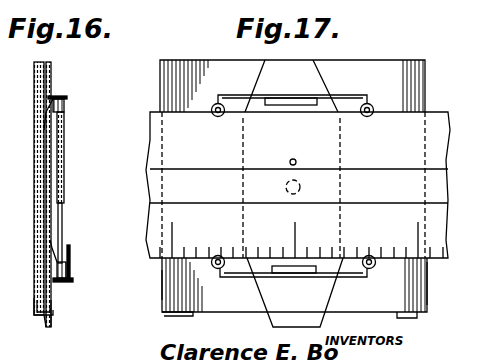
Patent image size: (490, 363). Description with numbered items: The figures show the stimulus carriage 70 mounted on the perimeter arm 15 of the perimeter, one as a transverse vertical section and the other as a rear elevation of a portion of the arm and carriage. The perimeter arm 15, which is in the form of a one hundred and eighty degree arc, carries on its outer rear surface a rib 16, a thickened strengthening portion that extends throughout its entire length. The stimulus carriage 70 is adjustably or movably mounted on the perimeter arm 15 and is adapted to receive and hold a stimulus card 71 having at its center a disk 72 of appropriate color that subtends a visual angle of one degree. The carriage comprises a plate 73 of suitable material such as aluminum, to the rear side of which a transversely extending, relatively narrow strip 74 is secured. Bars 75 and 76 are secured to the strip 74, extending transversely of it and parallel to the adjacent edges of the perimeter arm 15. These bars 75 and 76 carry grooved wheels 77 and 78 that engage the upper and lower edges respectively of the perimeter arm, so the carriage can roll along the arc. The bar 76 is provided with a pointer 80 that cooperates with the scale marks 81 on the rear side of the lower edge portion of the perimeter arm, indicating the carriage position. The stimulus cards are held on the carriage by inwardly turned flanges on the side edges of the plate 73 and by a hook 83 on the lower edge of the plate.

In FIG. 16, the perimeter arm 15 is at (63, 153).
In FIG. 17, the perimeter arm 15 is at (436, 116).
In FIG. 16, the rib 16 is at (64, 183).
In FIG. 17, the rib 16 is at (150, 206).
In FIG. 16, the stimulus carriage 70 is at (45, 325).
In FIG. 17, the stimulus carriage 70 is at (206, 72).
In FIG. 16, the stimulus card 71 is at (36, 244).
In FIG. 17, the disk 72 is at (212, 108).
In FIG. 16, the plate 73 is at (52, 303).
In FIG. 17, the plate 73 is at (164, 292).
In FIG. 16, the strip 74 is at (47, 222).
In FIG. 17, the strip 74 is at (262, 300).
In FIG. 16, the bar 75 is at (60, 96).
In FIG. 17, the bar 75 is at (350, 92).
In FIG. 16, the bar 76 is at (70, 284).
In FIG. 17, the bar 76 is at (352, 280).
In FIG. 16, the grooved wheels 77 is at (64, 118).
In FIG. 16, the grooved wheels 78 is at (64, 244).
In FIG. 17, the grooved wheels 78 is at (214, 270).
In FIG. 16, the pointer 80 is at (70, 258).
In FIG. 17, the pointer 80 is at (298, 278).
In FIG. 17, the scale marks 81 is at (430, 270).
In FIG. 16, the hook 83 is at (33, 306).